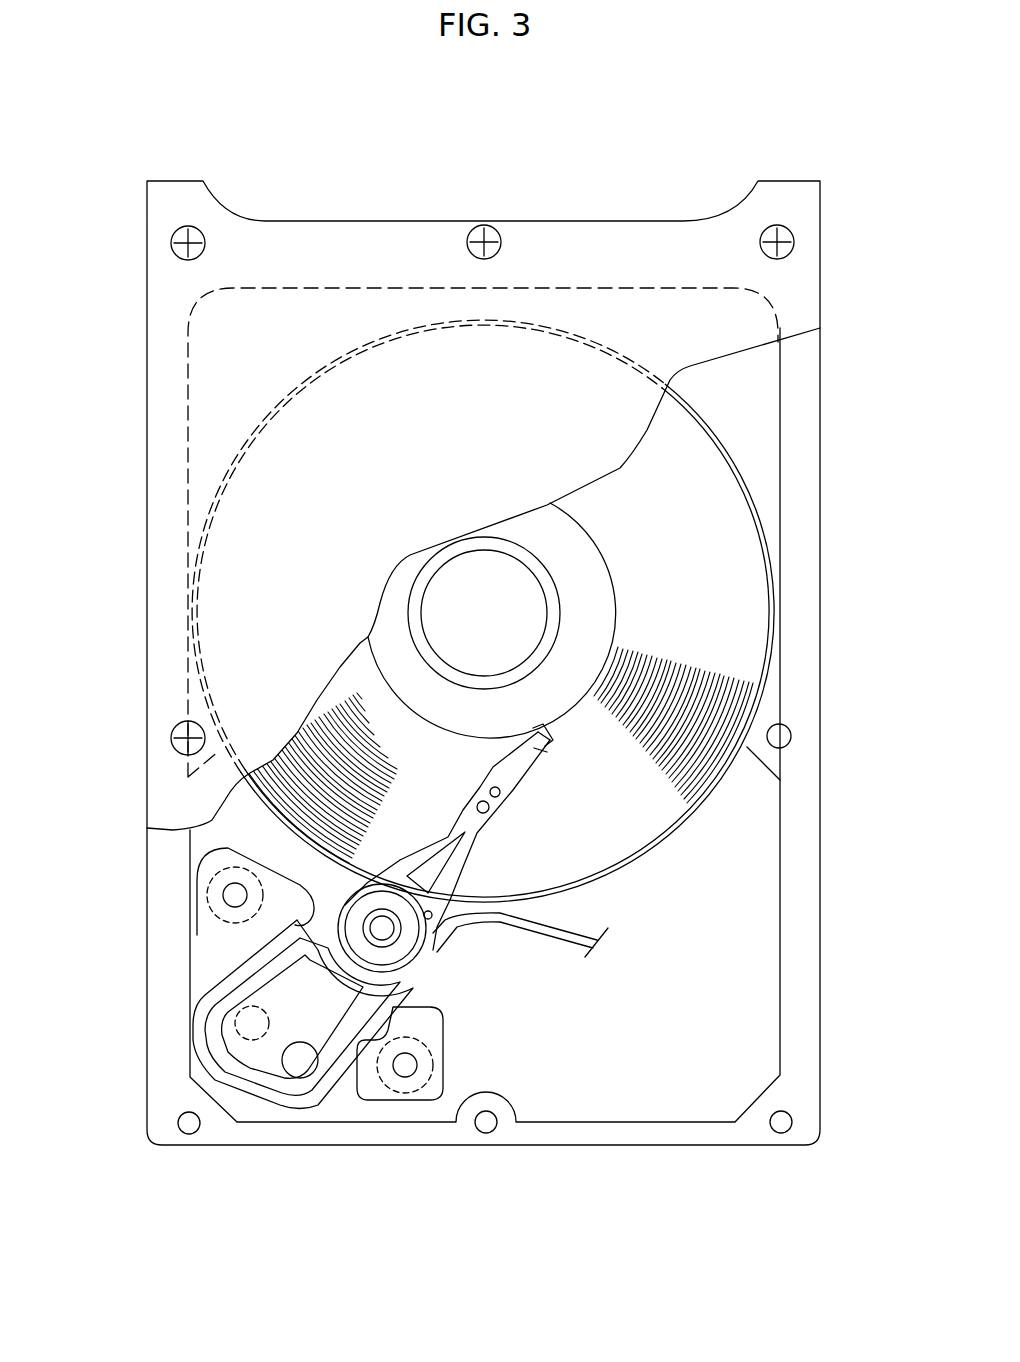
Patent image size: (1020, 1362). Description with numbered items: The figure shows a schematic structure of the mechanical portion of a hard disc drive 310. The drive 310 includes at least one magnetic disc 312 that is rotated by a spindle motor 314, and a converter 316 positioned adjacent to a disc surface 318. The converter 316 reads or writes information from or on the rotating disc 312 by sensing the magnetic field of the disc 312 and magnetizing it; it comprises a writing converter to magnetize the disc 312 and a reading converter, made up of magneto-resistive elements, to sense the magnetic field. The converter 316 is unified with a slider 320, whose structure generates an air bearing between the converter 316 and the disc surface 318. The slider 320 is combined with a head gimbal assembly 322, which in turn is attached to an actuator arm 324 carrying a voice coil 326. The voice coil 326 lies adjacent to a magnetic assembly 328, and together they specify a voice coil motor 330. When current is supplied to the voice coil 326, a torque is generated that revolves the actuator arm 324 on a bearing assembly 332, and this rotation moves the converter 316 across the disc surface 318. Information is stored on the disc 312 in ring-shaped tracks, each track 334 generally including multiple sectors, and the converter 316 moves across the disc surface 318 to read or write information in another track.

The drive 310 is at (685, 162).
The magnetic disc 312 is at (733, 550).
The spindle motor 314 is at (462, 590).
The converter 316 is at (548, 734).
The disc surface 318 is at (712, 614).
The slider 320 is at (543, 752).
The head gimbal assembly 322 is at (488, 833).
The actuator arm 324 is at (297, 922).
The voice coil 326 is at (220, 1013).
The magnetic assembly 328 is at (233, 958).
The VCM (Voice Coil Motor) 330 is at (340, 1088).
The bearing assembly 332 is at (393, 940).
The track 334 is at (343, 730).